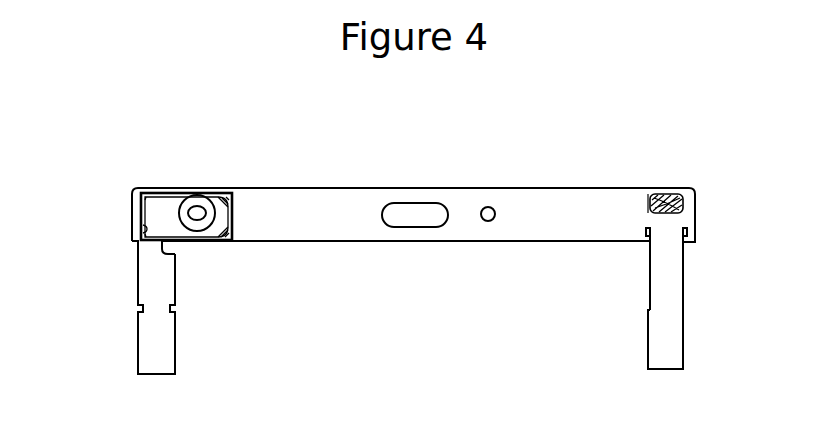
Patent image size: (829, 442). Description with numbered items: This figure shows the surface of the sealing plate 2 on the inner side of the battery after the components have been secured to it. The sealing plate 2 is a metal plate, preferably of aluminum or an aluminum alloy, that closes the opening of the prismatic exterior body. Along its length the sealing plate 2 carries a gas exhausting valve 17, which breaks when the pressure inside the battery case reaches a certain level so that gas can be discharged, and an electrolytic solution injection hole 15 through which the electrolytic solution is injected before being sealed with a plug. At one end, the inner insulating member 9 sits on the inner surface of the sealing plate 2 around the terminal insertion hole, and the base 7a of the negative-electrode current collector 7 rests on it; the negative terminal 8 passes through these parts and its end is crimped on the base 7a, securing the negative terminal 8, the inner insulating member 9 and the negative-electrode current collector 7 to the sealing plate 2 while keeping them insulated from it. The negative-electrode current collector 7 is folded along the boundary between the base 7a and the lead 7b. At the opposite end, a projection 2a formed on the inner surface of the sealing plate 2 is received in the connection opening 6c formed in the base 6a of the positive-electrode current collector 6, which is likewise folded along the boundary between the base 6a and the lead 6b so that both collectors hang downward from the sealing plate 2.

The sealing plate 2 is at (323, 205).
The projection 2a is at (660, 198).
The positive-electrode current collector 6 is at (725, 295).
The base 6a is at (683, 222).
The lead 6b is at (702, 327).
The connection opening 6c is at (672, 200).
The negative-electrode current collector 7 is at (95, 292).
The base 7a is at (157, 210).
The lead 7b is at (150, 295).
The negative terminal 8 is at (197, 205).
The inner insulating member 9 is at (229, 195).
The electrolytic solution injection hole 15 is at (488, 208).
The gas exhausting valve 17 is at (414, 215).